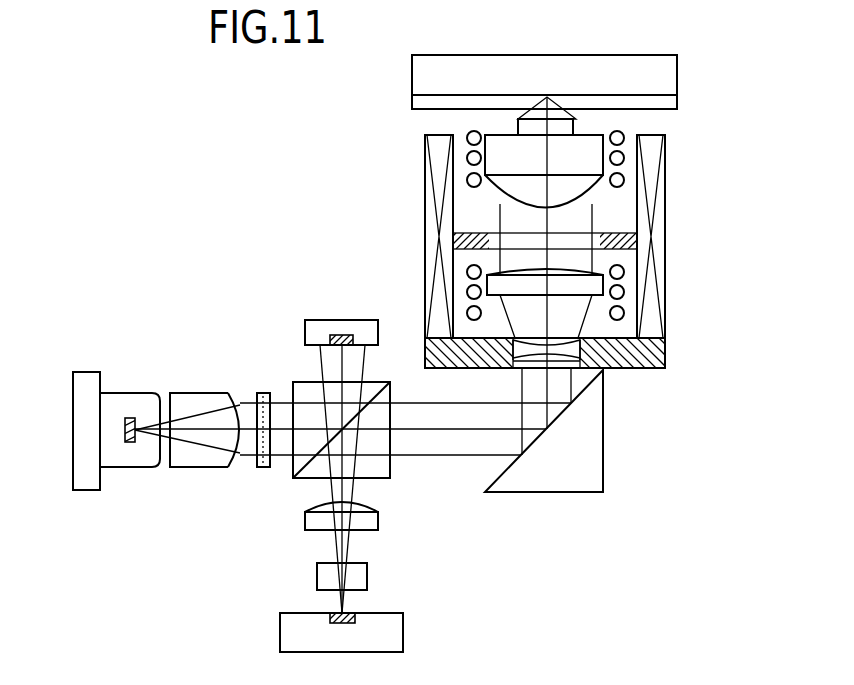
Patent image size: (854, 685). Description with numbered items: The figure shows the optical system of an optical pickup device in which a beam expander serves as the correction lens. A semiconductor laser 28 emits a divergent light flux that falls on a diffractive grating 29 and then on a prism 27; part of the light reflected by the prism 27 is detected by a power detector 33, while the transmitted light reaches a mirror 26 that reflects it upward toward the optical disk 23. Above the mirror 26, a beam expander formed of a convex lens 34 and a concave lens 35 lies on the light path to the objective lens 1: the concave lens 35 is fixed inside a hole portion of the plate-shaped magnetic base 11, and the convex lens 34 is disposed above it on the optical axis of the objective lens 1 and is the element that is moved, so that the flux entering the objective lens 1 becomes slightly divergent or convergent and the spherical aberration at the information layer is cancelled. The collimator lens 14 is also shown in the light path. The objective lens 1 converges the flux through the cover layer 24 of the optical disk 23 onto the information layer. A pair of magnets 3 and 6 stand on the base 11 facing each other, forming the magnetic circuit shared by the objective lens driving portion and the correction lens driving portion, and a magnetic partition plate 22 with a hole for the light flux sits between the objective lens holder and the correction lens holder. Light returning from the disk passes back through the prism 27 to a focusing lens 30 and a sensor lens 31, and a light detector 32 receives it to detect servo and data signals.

The objective lens 1 is at (595, 140).
The magnet 3 is at (665, 188).
The magnet 6 is at (425, 195).
The base 11 is at (658, 348).
The collimator lens 14 is at (187, 400).
The partition plate 22 is at (455, 240).
The optical disk 23 is at (668, 70).
The cover layer 24 is at (672, 102).
The mirror 26 is at (593, 465).
The prism 27 is at (381, 473).
The semiconductor laser 28 is at (73, 475).
The diffractive grating 29 is at (260, 460).
The focusing lens 30 is at (305, 520).
The sensor lens 31 is at (362, 578).
The light detector 32 is at (395, 630).
The power detector 33 is at (305, 330).
The convex lens 34 is at (598, 283).
The concave lens 35 is at (572, 353).